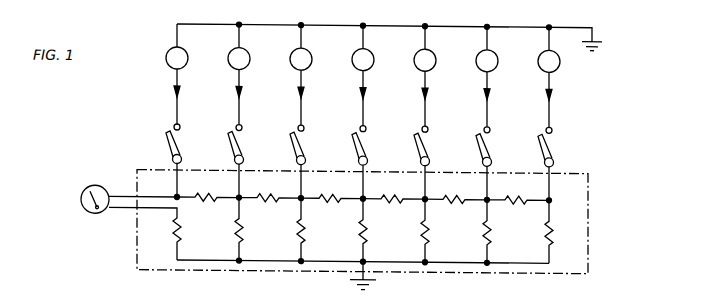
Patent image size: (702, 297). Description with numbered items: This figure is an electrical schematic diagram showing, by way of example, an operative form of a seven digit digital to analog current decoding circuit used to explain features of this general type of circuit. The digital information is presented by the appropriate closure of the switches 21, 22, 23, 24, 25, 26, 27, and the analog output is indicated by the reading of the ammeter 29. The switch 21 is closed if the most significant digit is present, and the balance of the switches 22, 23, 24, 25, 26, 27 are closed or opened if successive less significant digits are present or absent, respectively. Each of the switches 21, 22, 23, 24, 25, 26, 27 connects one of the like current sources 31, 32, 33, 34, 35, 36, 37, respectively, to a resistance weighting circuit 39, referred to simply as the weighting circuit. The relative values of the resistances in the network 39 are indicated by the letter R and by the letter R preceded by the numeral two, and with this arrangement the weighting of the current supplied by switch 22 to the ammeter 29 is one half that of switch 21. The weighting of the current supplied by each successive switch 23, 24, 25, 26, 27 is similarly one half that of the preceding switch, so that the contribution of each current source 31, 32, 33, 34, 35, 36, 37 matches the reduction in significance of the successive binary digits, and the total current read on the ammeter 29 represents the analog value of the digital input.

The switch 21 is at (181, 137).
The switch 22 is at (243, 137).
The switch 23 is at (305, 137).
The switch 24 is at (367, 137).
The switch 25 is at (429, 137).
The switch 26 is at (491, 137).
The switch 27 is at (553, 137).
The ammeter 29 is at (80, 200).
The current source 31 is at (185, 50).
The current source 32 is at (247, 50).
The current source 33 is at (309, 50).
The current source 34 is at (371, 50).
The current source 35 is at (433, 50).
The current source 36 is at (495, 50).
The current source 37 is at (560, 62).
The resistance weighting circuit 39 is at (588, 218).